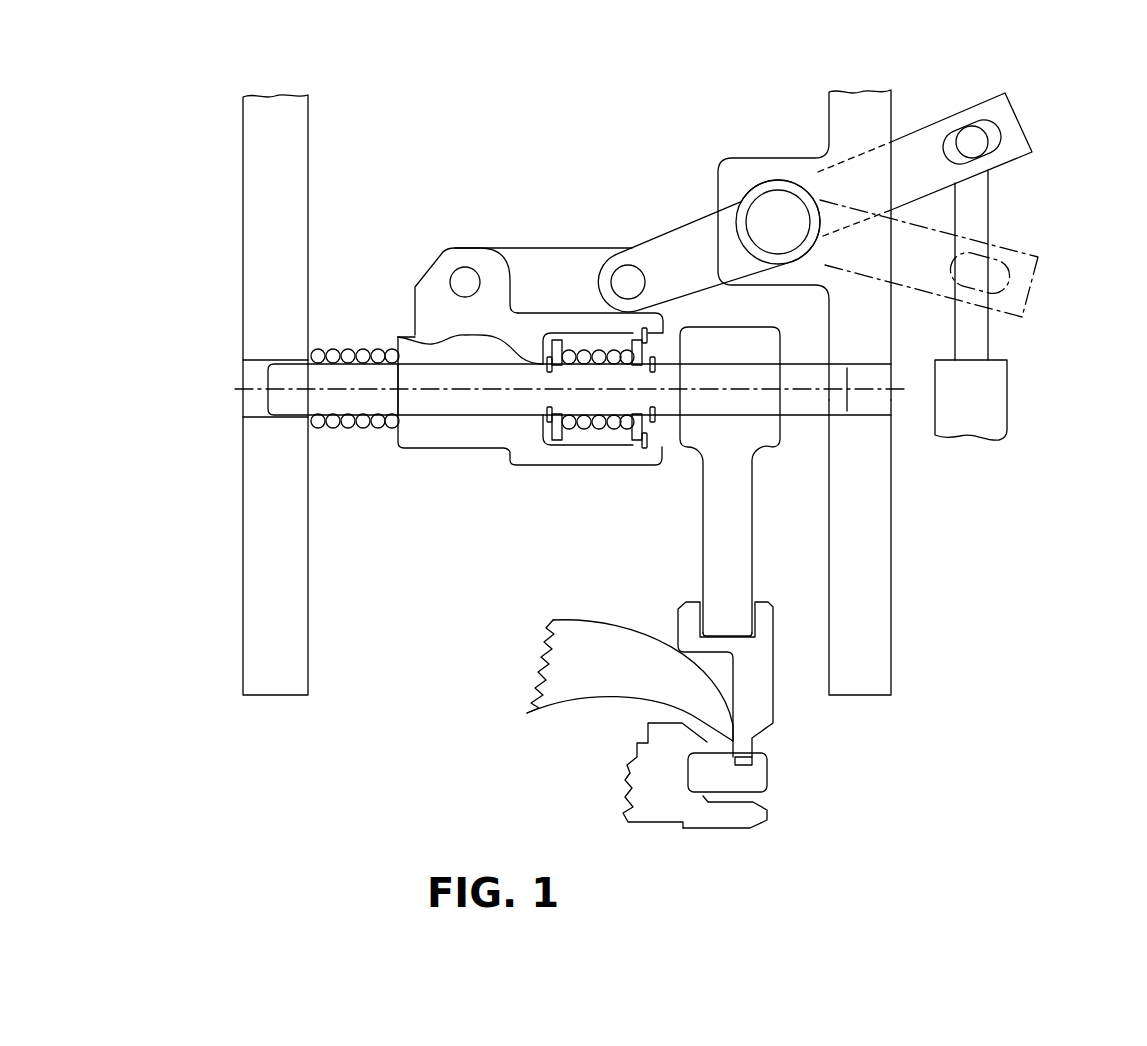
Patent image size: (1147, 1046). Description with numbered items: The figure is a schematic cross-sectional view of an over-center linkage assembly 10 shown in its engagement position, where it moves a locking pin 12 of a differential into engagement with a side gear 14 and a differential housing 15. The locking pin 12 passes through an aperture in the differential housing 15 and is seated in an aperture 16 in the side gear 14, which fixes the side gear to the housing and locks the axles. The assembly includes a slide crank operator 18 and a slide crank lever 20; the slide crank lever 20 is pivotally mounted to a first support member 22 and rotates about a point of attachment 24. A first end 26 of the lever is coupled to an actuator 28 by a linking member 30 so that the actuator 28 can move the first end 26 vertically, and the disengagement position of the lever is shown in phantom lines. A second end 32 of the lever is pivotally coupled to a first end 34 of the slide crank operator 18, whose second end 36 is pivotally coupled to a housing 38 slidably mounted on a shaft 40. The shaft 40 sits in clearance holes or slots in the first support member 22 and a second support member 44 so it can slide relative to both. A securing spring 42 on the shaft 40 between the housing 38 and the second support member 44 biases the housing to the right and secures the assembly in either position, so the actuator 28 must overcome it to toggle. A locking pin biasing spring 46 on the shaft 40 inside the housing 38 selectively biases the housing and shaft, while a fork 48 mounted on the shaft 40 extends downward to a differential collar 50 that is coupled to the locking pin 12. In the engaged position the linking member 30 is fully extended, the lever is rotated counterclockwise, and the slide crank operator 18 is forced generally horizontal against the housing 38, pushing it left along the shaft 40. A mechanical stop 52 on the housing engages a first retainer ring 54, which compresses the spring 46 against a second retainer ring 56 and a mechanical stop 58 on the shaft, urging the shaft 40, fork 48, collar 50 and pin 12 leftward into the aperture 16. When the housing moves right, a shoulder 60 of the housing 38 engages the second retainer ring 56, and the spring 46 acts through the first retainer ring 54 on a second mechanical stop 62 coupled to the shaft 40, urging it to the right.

The over-center linkage assembly 10 is at (572, 142).
The locking pin 12 is at (768, 772).
The side gear 14 is at (648, 823).
The differential housing 15 is at (550, 693).
The aperture 16 is at (688, 762).
The slide crank operator 18 is at (543, 275).
The slide crank lever 20 is at (902, 142).
The first support member 22 is at (877, 685).
The point of attachment 24 is at (778, 222).
The first end 26 is at (1017, 117).
The actuator 28 is at (1030, 447).
The linking member 30 is at (973, 217).
The second end 32 is at (626, 262).
The first end 34 is at (593, 270).
The second end 36 is at (507, 267).
The housing 38 is at (398, 448).
The shaft 40 is at (278, 396).
The securing spring 42 is at (322, 352).
The second support member 44 is at (258, 200).
The locking pin biasing spring 46 is at (595, 428).
The fork 48 is at (710, 548).
The differential collar 50 is at (775, 720).
The mechanical stop 52 is at (657, 335).
The first retainer ring 54 is at (637, 352).
The second retainer ring 56 is at (553, 446).
The mechanical stop 58 is at (550, 420).
The shoulder 60 is at (432, 343).
The second mechanical stop 62 is at (647, 447).